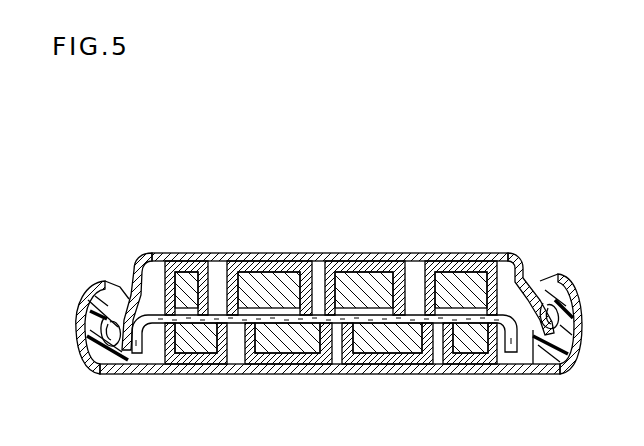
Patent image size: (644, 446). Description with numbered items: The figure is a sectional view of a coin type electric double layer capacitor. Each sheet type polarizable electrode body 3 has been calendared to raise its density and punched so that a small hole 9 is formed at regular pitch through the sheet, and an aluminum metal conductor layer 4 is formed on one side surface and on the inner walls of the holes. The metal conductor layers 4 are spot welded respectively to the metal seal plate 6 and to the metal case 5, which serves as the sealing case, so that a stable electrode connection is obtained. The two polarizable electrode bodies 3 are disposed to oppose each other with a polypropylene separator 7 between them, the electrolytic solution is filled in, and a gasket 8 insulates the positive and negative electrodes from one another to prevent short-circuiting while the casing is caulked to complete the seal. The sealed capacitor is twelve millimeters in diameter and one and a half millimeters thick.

The sheet type polarizable electrode body 3 is at (497, 257).
The metal conductor layer 4 is at (410, 258).
The metal case 5 is at (372, 372).
The metal seal plate 6 is at (278, 252).
The separator 7 is at (498, 313).
The gasket 8 is at (577, 340).
The small hole 9 is at (220, 270).